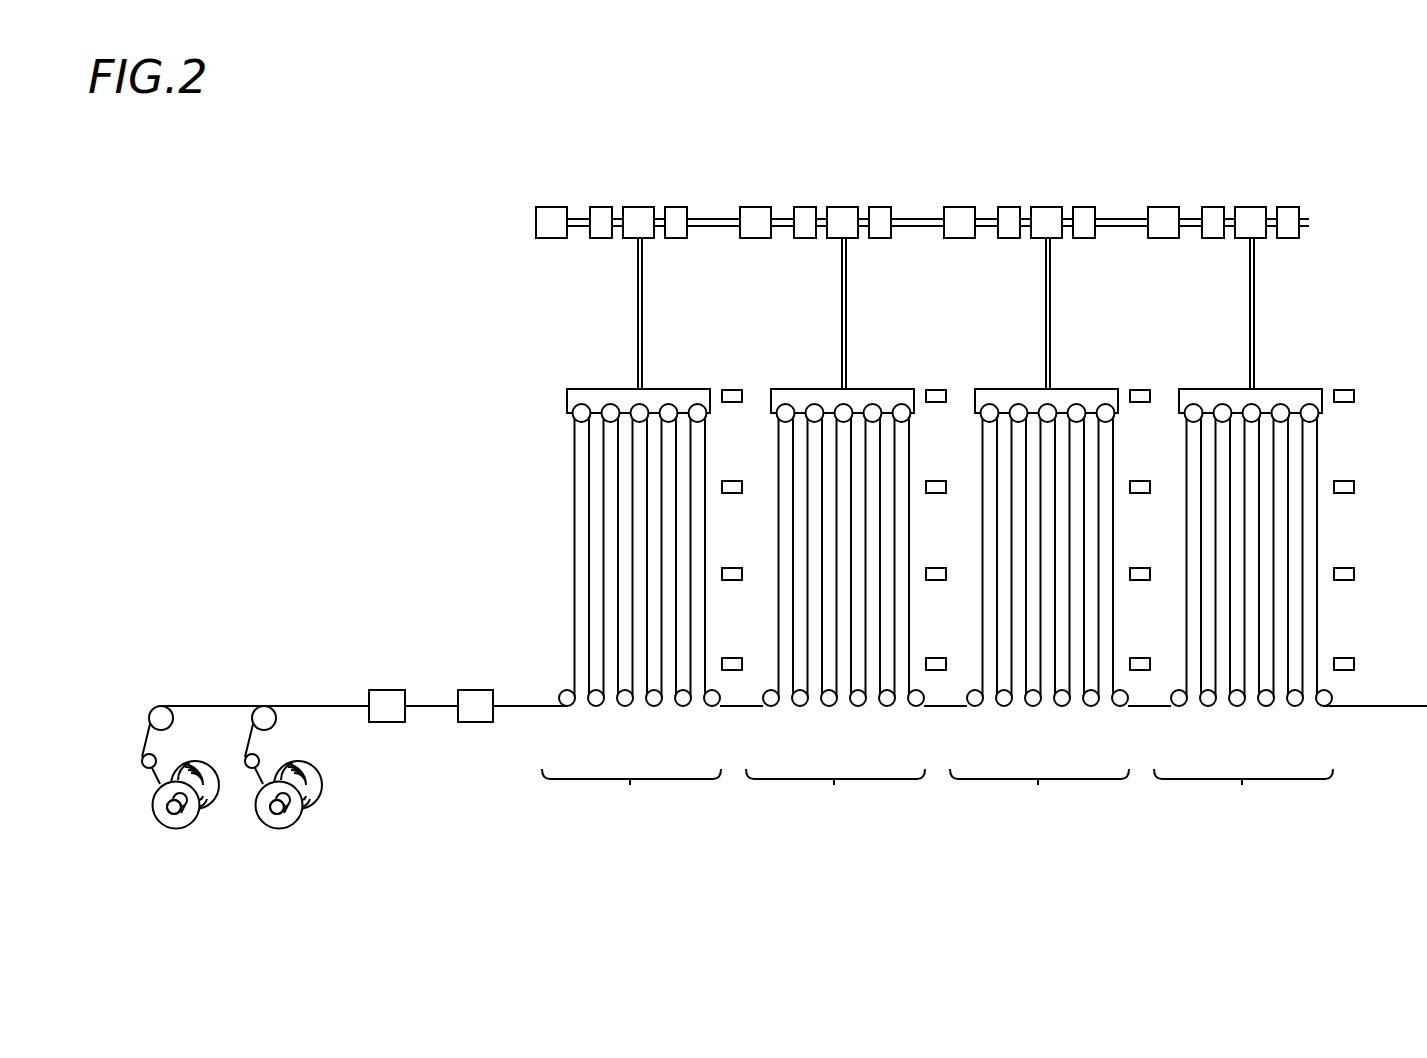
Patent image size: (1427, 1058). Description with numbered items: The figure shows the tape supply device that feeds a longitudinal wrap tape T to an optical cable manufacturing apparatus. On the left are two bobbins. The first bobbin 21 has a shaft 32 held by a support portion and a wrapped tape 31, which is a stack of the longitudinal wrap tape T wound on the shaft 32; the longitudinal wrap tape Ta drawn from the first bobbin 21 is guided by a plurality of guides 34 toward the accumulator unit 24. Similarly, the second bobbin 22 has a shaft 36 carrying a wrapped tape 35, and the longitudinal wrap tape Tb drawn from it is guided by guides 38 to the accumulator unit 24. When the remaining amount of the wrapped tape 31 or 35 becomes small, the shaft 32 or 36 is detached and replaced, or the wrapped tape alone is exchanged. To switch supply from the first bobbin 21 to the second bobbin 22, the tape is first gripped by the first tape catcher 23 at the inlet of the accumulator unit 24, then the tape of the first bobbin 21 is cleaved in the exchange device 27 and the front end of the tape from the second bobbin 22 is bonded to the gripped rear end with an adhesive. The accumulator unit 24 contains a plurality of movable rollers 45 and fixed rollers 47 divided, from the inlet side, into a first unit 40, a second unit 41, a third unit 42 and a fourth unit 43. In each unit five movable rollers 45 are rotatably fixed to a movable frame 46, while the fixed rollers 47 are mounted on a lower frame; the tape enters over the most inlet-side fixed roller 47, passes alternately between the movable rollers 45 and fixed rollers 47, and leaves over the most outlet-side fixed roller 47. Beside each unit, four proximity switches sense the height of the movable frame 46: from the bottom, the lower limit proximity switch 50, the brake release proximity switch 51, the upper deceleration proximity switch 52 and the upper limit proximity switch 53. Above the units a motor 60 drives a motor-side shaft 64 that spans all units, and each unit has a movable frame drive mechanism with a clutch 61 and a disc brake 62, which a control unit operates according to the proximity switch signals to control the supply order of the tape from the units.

The first bobbin 21 is at (142, 821).
The second bobbin 22 is at (262, 836).
The first tape catcher 23 is at (474, 700).
The accumulator unit 24 is at (512, 150).
The exchange device 27 is at (386, 700).
The wrapped tape 31 is at (198, 776).
The shaft 32 is at (173, 814).
The guides 34 is at (159, 705).
The wrapped tape 35 is at (317, 785).
The shaft 36 is at (278, 814).
The guides 38 is at (263, 705).
The first unit 40 is at (635, 574).
The second unit 41 is at (856, 603).
The third unit 42 is at (1060, 603).
The fourth unit 43 is at (1264, 603).
The movable rollers 45 is at (567, 410).
The movable frame 46 is at (596, 389).
The fixed rollers 47 is at (595, 708).
The lower limit proximity switch 50 is at (731, 658).
The brake release proximity switch 51 is at (731, 568).
The upper deceleration proximity switch 52 is at (731, 481).
The upper limit proximity switch 53 is at (731, 390).
The motor 60 is at (536, 220).
The clutch 61 is at (604, 207).
The disc brake 62 is at (680, 207).
The motor-side shaft 64 is at (706, 228).
The longitudinal wrap tape T is at (322, 705).
The longitudinal wrap tape Ta is at (142, 738).
The longitudinal wrap tape Tb is at (252, 737).